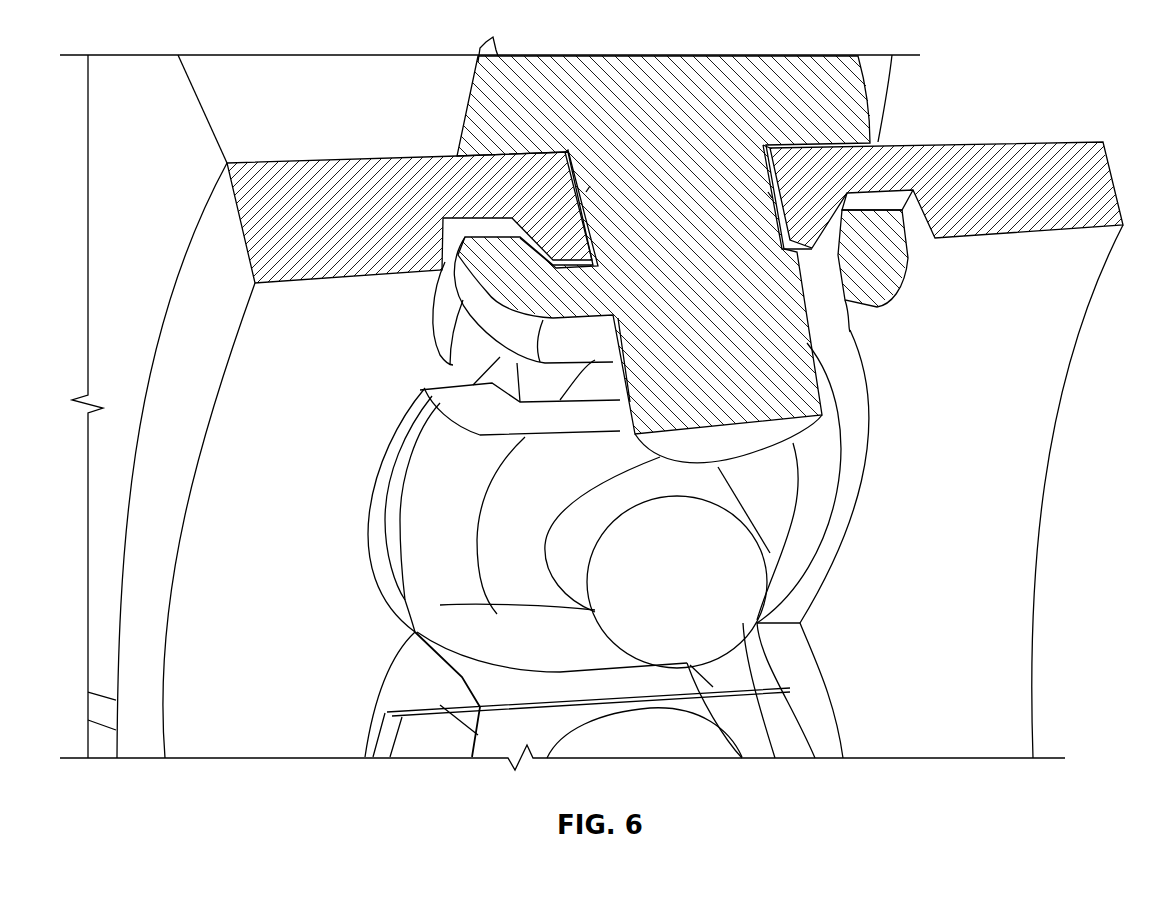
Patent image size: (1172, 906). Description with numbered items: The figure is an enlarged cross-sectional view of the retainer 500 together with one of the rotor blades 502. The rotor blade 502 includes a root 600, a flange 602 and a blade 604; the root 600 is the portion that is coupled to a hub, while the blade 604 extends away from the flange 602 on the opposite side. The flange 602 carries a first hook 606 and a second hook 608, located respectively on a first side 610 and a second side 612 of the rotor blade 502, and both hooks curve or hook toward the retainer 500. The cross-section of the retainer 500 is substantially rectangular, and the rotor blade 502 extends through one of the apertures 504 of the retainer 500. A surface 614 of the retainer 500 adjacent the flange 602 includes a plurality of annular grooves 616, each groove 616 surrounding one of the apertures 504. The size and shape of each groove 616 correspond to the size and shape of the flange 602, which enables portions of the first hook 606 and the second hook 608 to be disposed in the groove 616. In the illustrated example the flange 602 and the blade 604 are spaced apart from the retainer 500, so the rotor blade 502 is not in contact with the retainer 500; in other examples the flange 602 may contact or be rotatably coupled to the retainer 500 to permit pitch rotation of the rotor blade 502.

The retainer 500 is at (214, 223).
The rotor blade 502 is at (214, 72).
The aperture 504 is at (863, 140).
The root 600 is at (689, 334).
The flange 602 is at (483, 313).
The blade 604 is at (644, 94).
The first hook 606 is at (481, 274).
The second hook 608 is at (851, 252).
The first side 610 is at (582, 193).
The second side 612 is at (770, 196).
The surface 614 is at (936, 432).
The annular groove 616 is at (917, 230).